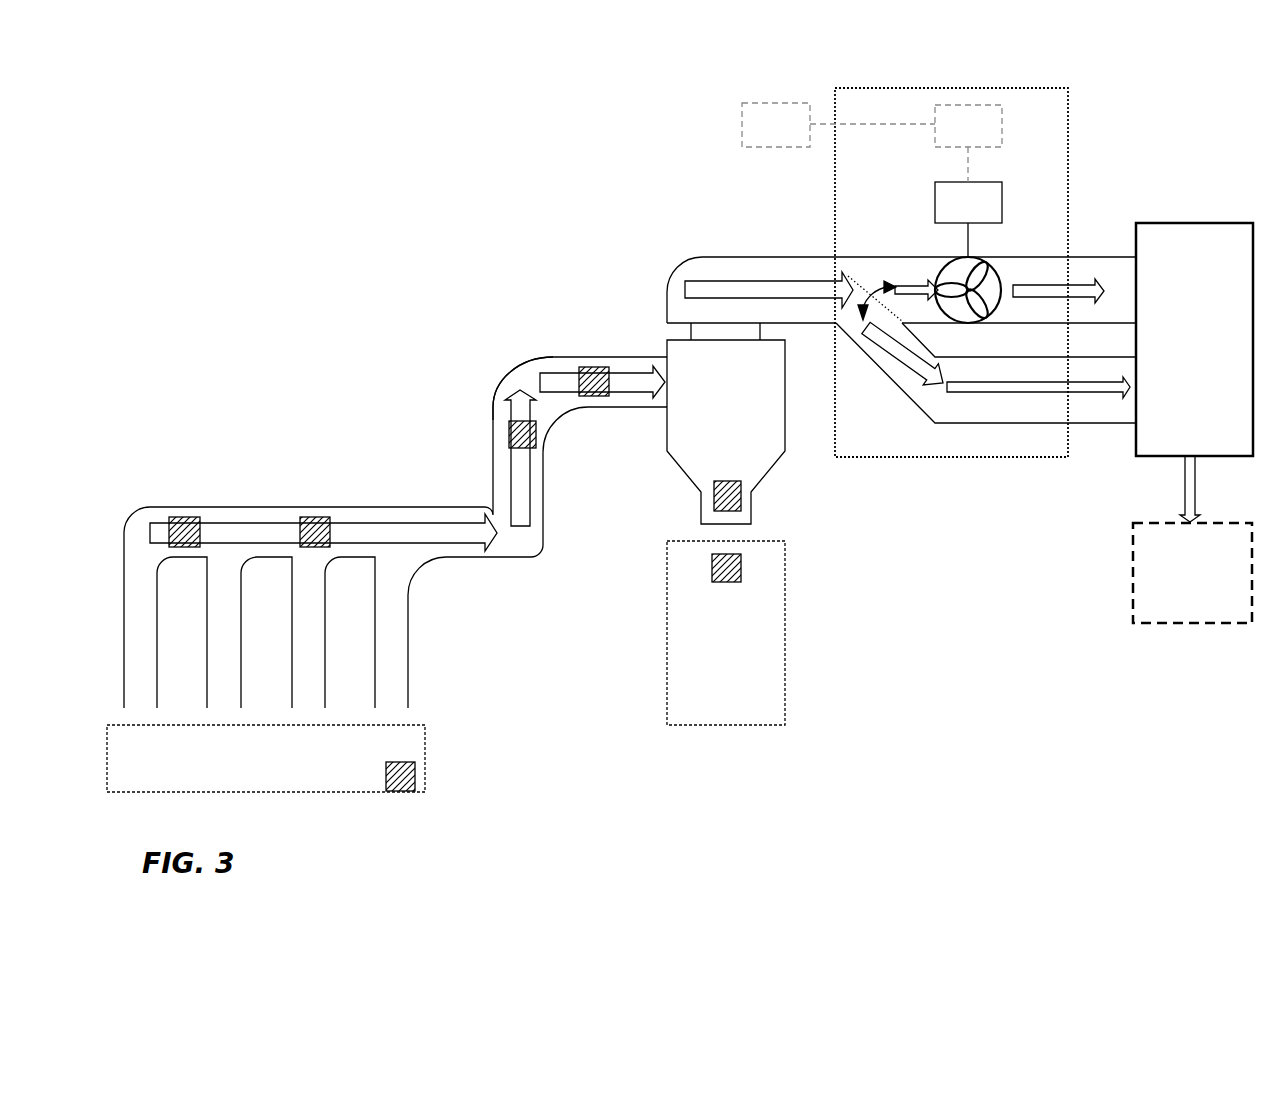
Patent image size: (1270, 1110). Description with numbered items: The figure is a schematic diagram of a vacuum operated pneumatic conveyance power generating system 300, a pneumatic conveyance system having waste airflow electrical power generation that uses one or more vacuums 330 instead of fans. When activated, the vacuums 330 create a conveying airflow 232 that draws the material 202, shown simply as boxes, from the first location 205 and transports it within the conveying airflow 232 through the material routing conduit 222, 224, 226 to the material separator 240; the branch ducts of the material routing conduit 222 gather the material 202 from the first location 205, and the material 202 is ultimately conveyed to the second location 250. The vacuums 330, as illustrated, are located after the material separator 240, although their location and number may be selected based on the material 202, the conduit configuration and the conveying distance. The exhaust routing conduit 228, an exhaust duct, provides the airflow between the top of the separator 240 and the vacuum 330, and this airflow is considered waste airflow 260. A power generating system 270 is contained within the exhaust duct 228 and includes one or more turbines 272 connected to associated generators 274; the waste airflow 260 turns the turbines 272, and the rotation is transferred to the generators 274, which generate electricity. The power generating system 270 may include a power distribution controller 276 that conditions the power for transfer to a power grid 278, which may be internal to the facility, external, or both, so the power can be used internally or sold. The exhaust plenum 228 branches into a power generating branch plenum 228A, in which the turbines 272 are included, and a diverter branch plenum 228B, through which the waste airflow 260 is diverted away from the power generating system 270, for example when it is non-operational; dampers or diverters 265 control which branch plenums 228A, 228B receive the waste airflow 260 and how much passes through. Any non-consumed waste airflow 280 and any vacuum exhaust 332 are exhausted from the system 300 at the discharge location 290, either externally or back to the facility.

The vacuum operated pneumatic conveyance power generating system 300 is at (238, 224).
The material 202 is at (190, 517).
The first location 205 is at (426, 760).
The material routing conduit 222 is at (408, 658).
The material routing conduit 224 is at (258, 507).
The material routing conduit 226 is at (546, 352).
The exhaust routing conduit 228 is at (738, 257).
The power generating branch plenum 228A is at (921, 257).
The diverter branch plenum 228B is at (913, 402).
The conveying airflow 232 is at (403, 523).
The material separator 240 is at (770, 472).
The second location 250 is at (722, 726).
The waste airflow 260 is at (800, 280).
The damper or diverter 265 is at (870, 278).
The power generating system 270 is at (935, 460).
The turbine 272 is at (997, 320).
The generator 274 is at (1003, 190).
The power distribution controller 276 is at (1005, 130).
The power grid 278 is at (742, 124).
The non-consumed waste airflow 280 is at (1045, 283).
The discharge location 290 is at (1133, 560).
The vacuum 330 is at (1178, 232).
The vacuum exhaust 332 is at (1183, 483).